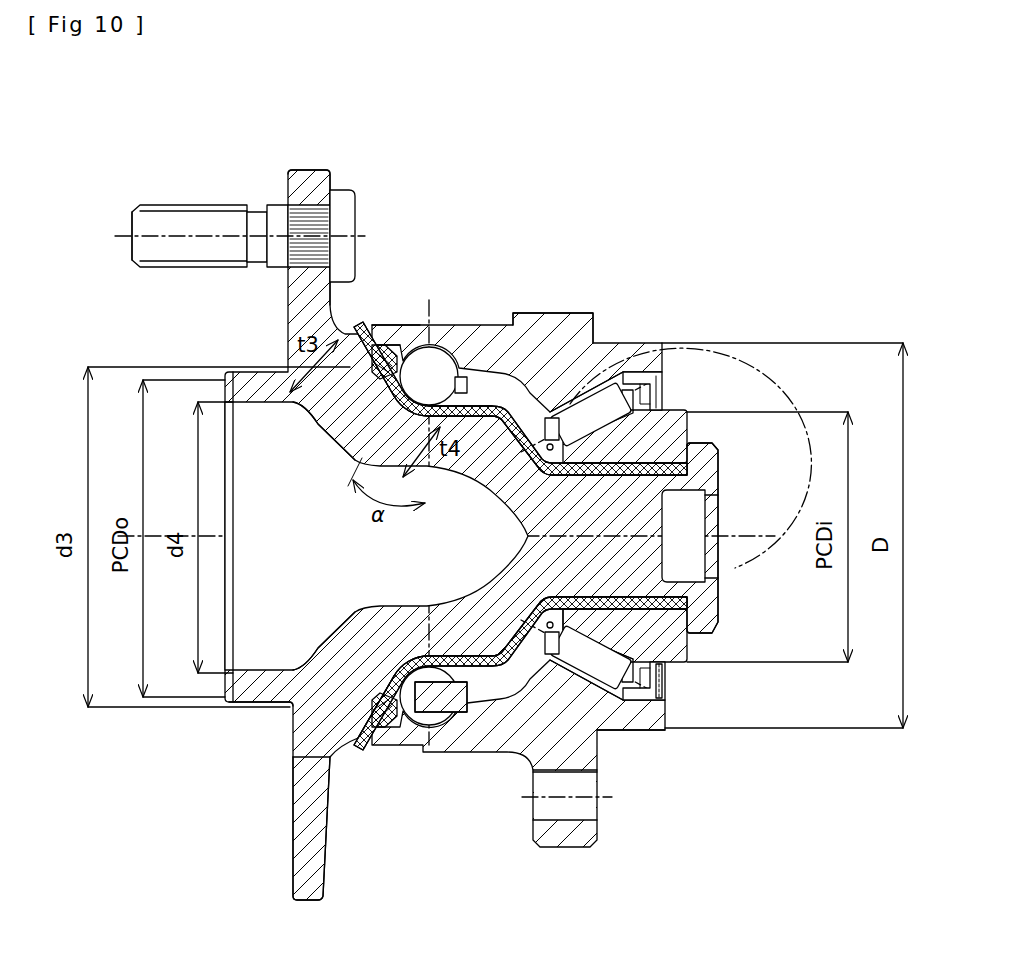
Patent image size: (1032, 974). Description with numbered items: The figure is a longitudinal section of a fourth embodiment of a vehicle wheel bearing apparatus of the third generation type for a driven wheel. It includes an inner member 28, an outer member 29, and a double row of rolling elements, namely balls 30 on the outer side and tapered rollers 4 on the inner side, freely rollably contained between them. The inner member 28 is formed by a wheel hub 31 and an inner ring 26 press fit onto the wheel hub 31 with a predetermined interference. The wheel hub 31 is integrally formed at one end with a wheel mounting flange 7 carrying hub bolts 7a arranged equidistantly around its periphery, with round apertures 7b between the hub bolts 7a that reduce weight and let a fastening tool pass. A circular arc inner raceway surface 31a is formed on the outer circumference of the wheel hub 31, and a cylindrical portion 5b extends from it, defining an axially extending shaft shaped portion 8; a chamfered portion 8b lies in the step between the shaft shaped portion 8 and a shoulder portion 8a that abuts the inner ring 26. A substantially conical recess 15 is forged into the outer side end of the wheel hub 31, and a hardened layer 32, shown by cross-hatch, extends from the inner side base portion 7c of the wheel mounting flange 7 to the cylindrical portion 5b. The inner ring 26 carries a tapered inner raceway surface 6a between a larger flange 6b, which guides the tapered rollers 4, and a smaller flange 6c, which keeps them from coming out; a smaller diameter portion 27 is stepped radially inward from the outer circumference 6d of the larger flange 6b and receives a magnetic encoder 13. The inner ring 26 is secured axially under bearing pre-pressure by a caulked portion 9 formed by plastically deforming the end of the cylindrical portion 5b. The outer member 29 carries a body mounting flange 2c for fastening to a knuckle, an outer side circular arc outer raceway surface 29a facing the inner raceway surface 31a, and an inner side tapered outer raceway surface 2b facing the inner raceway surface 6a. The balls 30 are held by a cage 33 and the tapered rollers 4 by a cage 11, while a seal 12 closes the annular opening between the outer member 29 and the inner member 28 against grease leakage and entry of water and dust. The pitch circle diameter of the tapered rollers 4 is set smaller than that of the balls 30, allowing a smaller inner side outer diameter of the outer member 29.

The inner side tapered outer raceway surface 2b is at (600, 338).
The body mounting flange 2c is at (576, 836).
The tapered rollers 4 is at (617, 733).
The cylindrical portion 5b is at (657, 545).
The inner raceway surface 6a is at (585, 510).
The larger flange 6b is at (627, 637).
The smaller flange 6c is at (515, 642).
The outer circumference of the larger flange 6d is at (625, 426).
The wheel mounting flange 7 is at (312, 192).
The hub bolts 7a is at (208, 228).
The round apertures 7b is at (300, 798).
The base portion 7c is at (284, 722).
The shaft shaped portion 8 is at (468, 345).
The shoulder portion 8a is at (530, 446).
The chamfered portion 8b is at (462, 421).
The caulked portion 9 is at (702, 465).
The cage 11 is at (657, 728).
The seal 12 is at (385, 735).
The magnetic encoder 13 is at (662, 680).
The conical recess 15 is at (415, 612).
The inner ring 26 is at (676, 416).
The smaller diameter portion 27 is at (655, 380).
The inner member 28 is at (330, 454).
The outer member 29 is at (511, 322).
The outer side circular arc outer raceway surface 29a is at (414, 330).
The balls 30 is at (437, 722).
The wheel hub 31 is at (322, 418).
The inner raceway surface 31a is at (345, 334).
The hardened layer 32 is at (443, 652).
The cage 33 is at (455, 730).